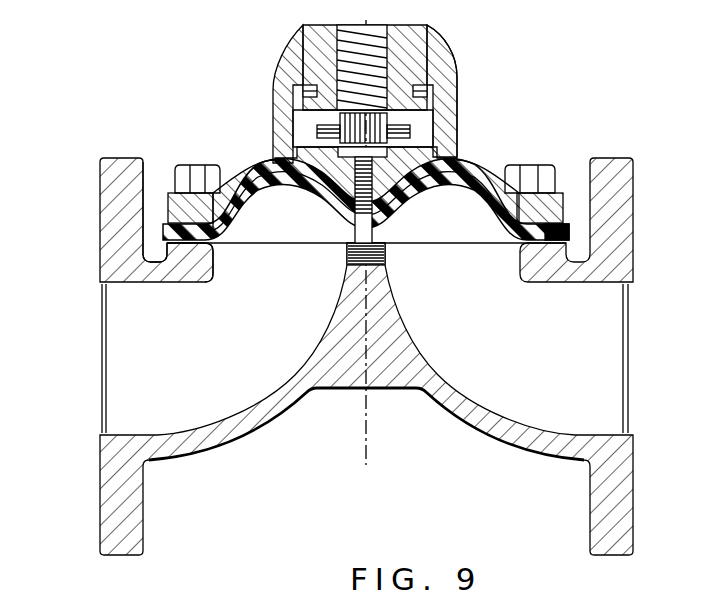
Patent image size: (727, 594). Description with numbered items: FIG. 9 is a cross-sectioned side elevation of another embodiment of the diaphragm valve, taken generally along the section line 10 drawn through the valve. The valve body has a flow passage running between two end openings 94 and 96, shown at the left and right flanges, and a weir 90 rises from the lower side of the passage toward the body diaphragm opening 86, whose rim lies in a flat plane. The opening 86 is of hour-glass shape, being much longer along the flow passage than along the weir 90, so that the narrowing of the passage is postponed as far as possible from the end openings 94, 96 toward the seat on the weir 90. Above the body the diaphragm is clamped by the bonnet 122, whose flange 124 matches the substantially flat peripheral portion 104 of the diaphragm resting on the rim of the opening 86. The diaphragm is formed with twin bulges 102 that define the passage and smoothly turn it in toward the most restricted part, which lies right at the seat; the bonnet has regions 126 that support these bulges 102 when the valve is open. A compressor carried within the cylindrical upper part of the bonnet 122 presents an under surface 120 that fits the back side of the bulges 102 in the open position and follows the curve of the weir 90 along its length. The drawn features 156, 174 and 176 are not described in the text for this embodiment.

The section line 10- 10 is at (456, 42).
The body diaphragm opening 86 is at (210, 258).
The weir 90 is at (350, 285).
The end opening 94 is at (100, 390).
The end opening 96 is at (631, 353).
The twin bulges 102 is at (249, 178).
The peripheral portion of the diaphragm 104 is at (151, 195).
The under surface of the compressor 120 is at (420, 188).
The bonnet 122 is at (267, 85).
The bonnet flange 124 is at (190, 205).
The bonnet regions 126 is at (459, 154).
The weir bottom surface 156 is at (313, 396).
The diaphragm bead 174 is at (563, 232).
The diaphragm 176 is at (312, 214).